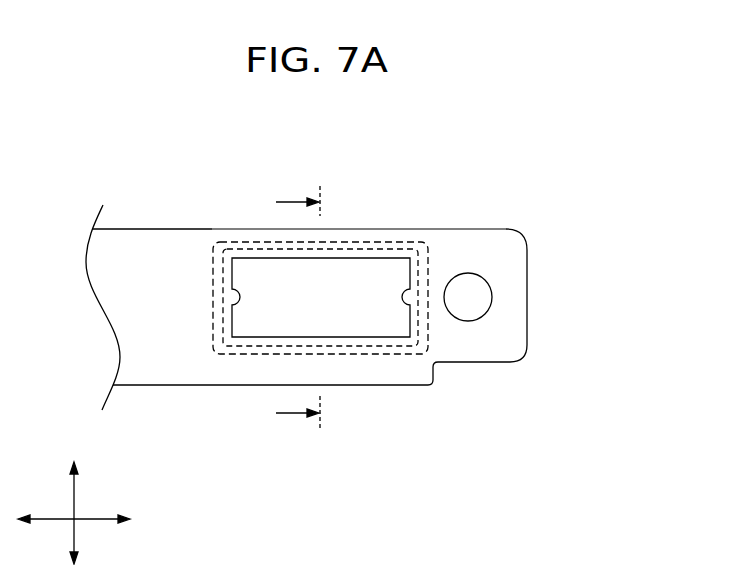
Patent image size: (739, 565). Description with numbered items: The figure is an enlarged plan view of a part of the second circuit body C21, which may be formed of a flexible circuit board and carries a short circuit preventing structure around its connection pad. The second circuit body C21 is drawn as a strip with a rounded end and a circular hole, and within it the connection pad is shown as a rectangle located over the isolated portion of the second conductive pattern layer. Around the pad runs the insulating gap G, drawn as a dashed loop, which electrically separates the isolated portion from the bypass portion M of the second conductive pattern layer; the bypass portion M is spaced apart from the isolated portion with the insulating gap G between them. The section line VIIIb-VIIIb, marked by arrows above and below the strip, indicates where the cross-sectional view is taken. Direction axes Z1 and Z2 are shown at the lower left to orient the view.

The bypass portion M is at (157, 258).
The insulating gap G is at (428, 253).
The second circuit body C21 is at (505, 253).
The section line VIIIb- VIIIb is at (272, 308).
The first direction Z1 is at (75, 500).
The second direction Z2 is at (89, 520).